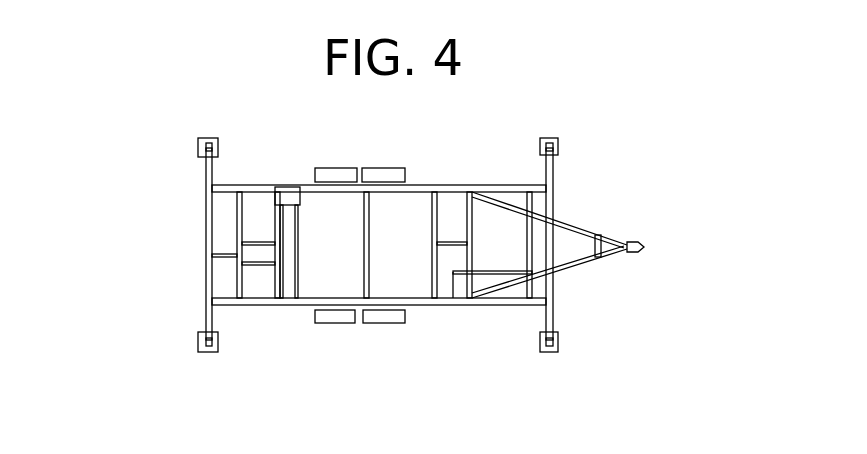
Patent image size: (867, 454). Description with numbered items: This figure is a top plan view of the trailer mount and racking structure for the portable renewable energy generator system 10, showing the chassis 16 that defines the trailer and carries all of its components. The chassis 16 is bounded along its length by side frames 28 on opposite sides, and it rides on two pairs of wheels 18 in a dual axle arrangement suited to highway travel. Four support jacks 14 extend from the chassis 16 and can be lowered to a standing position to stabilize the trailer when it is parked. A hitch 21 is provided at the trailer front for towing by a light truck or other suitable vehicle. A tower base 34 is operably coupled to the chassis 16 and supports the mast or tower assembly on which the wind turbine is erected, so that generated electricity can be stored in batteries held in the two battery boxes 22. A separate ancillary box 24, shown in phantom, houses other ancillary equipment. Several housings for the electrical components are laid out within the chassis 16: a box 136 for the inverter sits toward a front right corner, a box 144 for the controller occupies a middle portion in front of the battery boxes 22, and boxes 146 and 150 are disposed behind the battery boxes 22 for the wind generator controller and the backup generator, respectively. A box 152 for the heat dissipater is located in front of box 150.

The portable renewable energy generator system 10 is at (608, 373).
The support jacks 14 is at (553, 158).
The chassis 16 is at (250, 305).
The wheels 18 is at (388, 168).
The hitch 21 is at (646, 247).
The battery boxes 22 is at (352, 222).
The ancillary box 24 is at (508, 333).
The side frame 28 is at (227, 185).
The tower base 34 is at (287, 190).
The box for inverter 136 is at (552, 290).
The box for controller 144 is at (445, 262).
The box for wind generator controller 146 is at (252, 220).
The box for backup generator 150 is at (218, 265).
The box for heat dissipater 152 is at (247, 280).